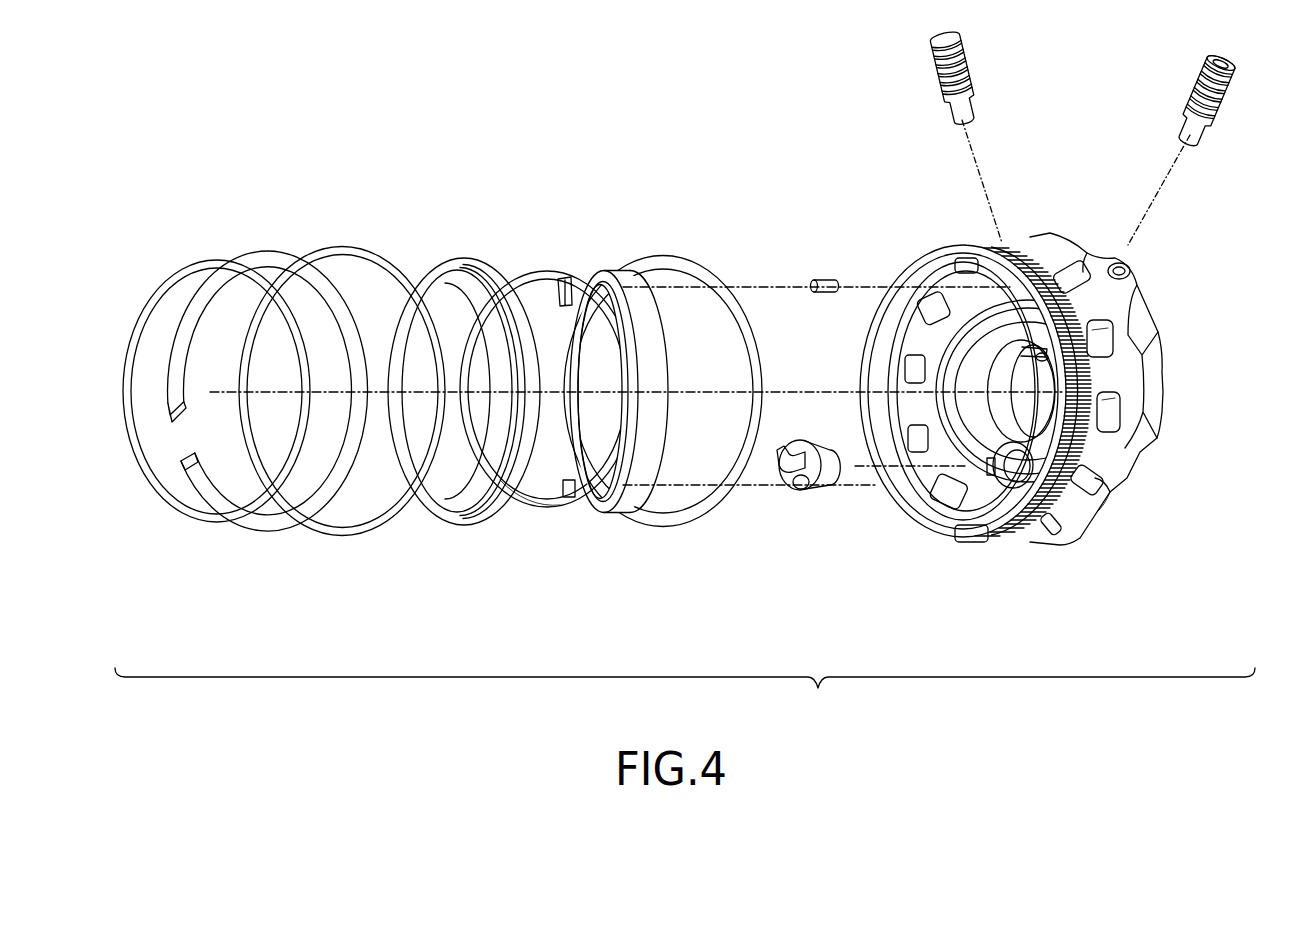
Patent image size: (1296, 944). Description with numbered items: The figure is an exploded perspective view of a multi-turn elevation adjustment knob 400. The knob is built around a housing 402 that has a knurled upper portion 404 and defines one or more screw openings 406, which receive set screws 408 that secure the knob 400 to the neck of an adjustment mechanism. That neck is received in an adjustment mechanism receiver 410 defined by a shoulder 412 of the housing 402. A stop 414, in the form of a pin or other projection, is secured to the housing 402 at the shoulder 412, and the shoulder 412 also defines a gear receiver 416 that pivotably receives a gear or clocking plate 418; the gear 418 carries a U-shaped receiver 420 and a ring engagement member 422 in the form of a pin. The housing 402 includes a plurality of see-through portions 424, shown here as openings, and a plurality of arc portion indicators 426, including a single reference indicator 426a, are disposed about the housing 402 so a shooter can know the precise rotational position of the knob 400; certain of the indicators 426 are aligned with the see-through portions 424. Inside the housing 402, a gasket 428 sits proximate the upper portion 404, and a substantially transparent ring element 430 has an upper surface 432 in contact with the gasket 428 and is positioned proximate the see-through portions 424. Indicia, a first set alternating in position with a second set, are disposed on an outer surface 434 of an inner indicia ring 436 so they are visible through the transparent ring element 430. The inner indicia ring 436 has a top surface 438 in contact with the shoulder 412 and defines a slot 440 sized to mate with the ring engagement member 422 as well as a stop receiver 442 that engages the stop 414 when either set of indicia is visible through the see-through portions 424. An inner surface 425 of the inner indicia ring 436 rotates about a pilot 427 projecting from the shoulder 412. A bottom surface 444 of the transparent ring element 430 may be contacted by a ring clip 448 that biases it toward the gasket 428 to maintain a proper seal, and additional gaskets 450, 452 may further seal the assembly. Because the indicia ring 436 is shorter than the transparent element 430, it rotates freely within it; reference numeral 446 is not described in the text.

The multi-turn elevation adjustment knob 400 is at (685, 704).
The housing 402 is at (1051, 403).
The knurled upper portion 404 is at (1171, 420).
The screw openings 406 is at (1120, 277).
The set screws 408 is at (966, 58).
The adjustment mechanism receiver 410 is at (1012, 364).
The shoulder 412 is at (987, 372).
The stop 414 is at (825, 281).
The gear receiver 416 is at (1010, 481).
The gear 418 is at (829, 487).
The U-shaped receiver 420 is at (798, 446).
The ring engagement member 422 is at (805, 492).
The see-through portions 424 is at (1095, 475).
The inner surface 425 is at (505, 382).
The arc portion indicators 426 is at (1120, 545).
The reference indicator 426a is at (1095, 429).
The pilot 427 is at (973, 440).
The gasket 428 is at (703, 508).
The substantially transparent ring element 430 is at (507, 505).
The upper surface 432 is at (508, 254).
The outer surface 434 is at (667, 358).
The inner indicia ring 436 is at (628, 382).
The top surface 438 is at (617, 261).
The slot 440 is at (574, 498).
The stop receiver 442 is at (565, 280).
The bottom surface 444 is at (464, 381).
The ring face 446 is at (549, 531).
The ring clip 448 is at (277, 523).
The gasket 450 is at (368, 525).
The gasket 452 is at (178, 505).